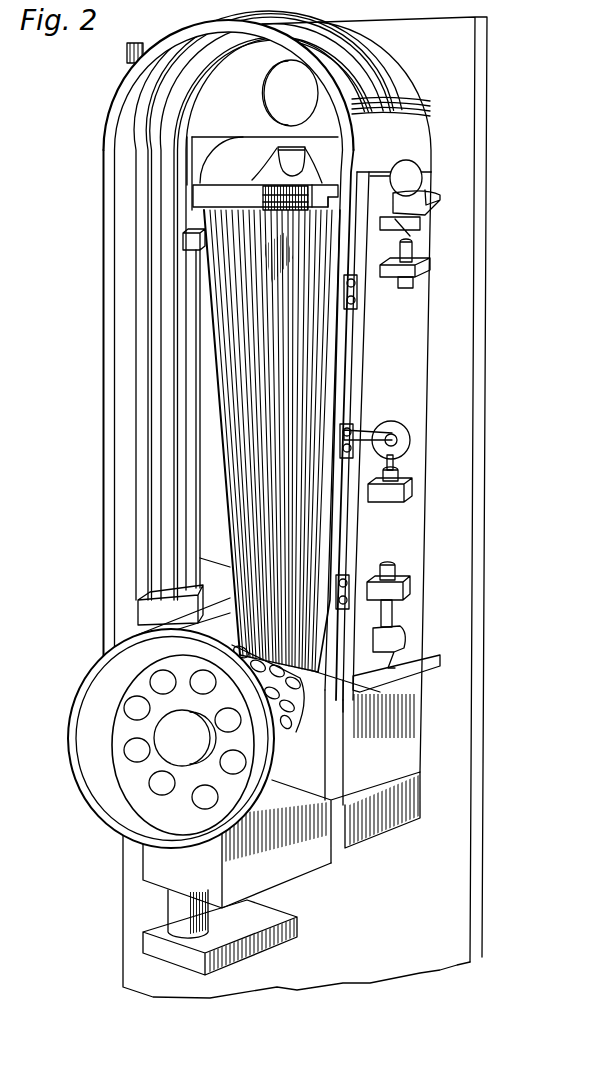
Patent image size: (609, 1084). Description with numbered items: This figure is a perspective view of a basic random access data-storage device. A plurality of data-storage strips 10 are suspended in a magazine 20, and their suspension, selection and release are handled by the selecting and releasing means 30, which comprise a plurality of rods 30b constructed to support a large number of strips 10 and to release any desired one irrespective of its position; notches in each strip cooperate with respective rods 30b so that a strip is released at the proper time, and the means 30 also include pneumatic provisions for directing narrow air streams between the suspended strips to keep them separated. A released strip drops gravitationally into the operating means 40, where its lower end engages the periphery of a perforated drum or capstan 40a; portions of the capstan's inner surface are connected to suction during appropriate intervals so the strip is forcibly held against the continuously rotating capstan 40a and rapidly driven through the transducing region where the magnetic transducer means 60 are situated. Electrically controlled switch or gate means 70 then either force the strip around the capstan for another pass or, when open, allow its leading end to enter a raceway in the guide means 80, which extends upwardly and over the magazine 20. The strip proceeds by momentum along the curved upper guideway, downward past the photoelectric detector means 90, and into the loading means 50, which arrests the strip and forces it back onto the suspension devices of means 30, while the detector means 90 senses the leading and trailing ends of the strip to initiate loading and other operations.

The data-storage strips 10 is at (283, 262).
The magazine 20 is at (344, 540).
The selecting and releasing means 30 is at (323, 192).
The rods 30b is at (276, 185).
The operating means 40 is at (99, 809).
The perforated drum or capstan 40a is at (300, 690).
The loading means 50 is at (408, 403).
The magnetic transducer means 60 is at (168, 855).
The switch or gate means 70 is at (90, 648).
The guide means 80 is at (167, 132).
The photoelectric detector means 90 is at (440, 196).